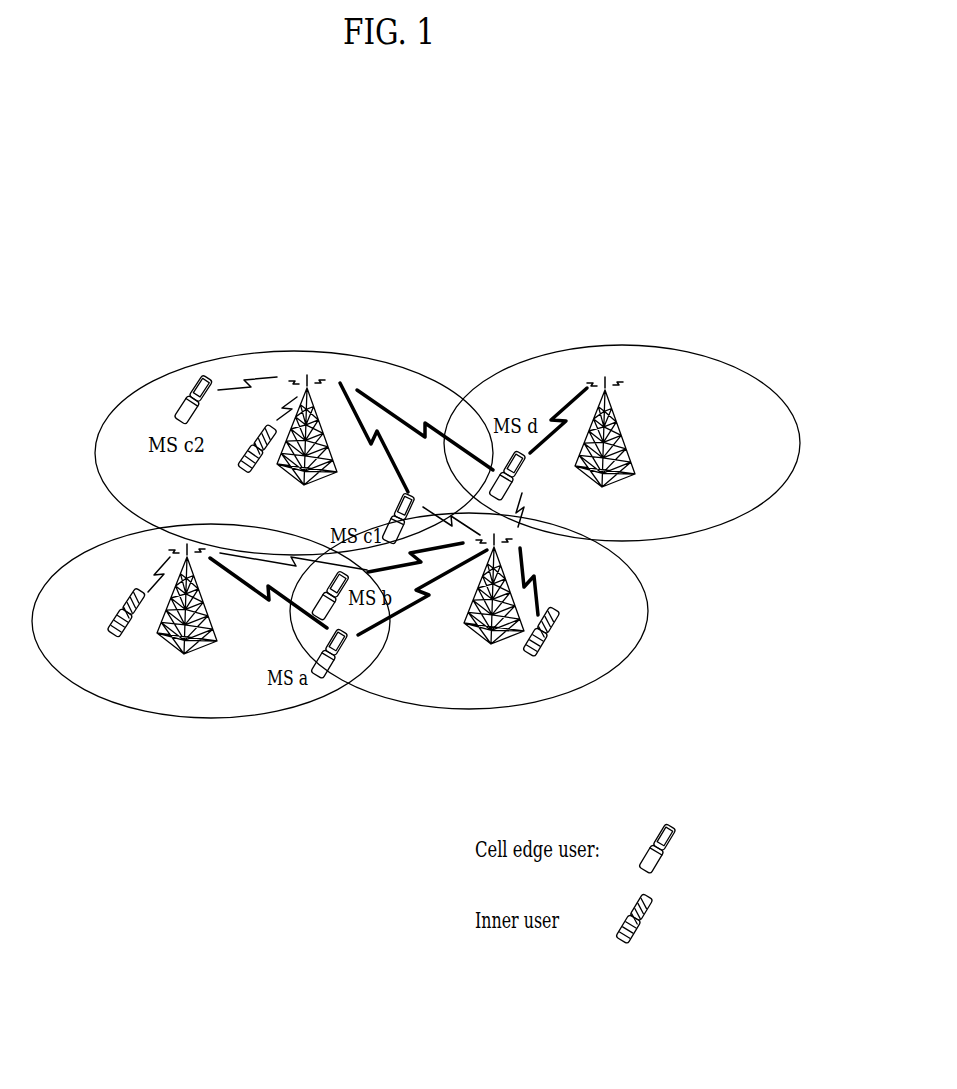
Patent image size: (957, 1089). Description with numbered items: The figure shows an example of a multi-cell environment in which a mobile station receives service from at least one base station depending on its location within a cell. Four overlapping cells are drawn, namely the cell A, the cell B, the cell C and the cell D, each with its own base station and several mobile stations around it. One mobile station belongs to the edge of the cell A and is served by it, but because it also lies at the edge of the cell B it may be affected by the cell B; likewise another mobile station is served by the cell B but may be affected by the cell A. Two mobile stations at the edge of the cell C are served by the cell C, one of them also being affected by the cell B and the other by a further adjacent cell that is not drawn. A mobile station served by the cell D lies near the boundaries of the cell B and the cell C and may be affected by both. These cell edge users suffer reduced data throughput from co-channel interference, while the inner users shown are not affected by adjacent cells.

The cell A is at (187, 617).
The cell B is at (494, 604).
The cell C is at (307, 447).
The cell D is at (605, 446).